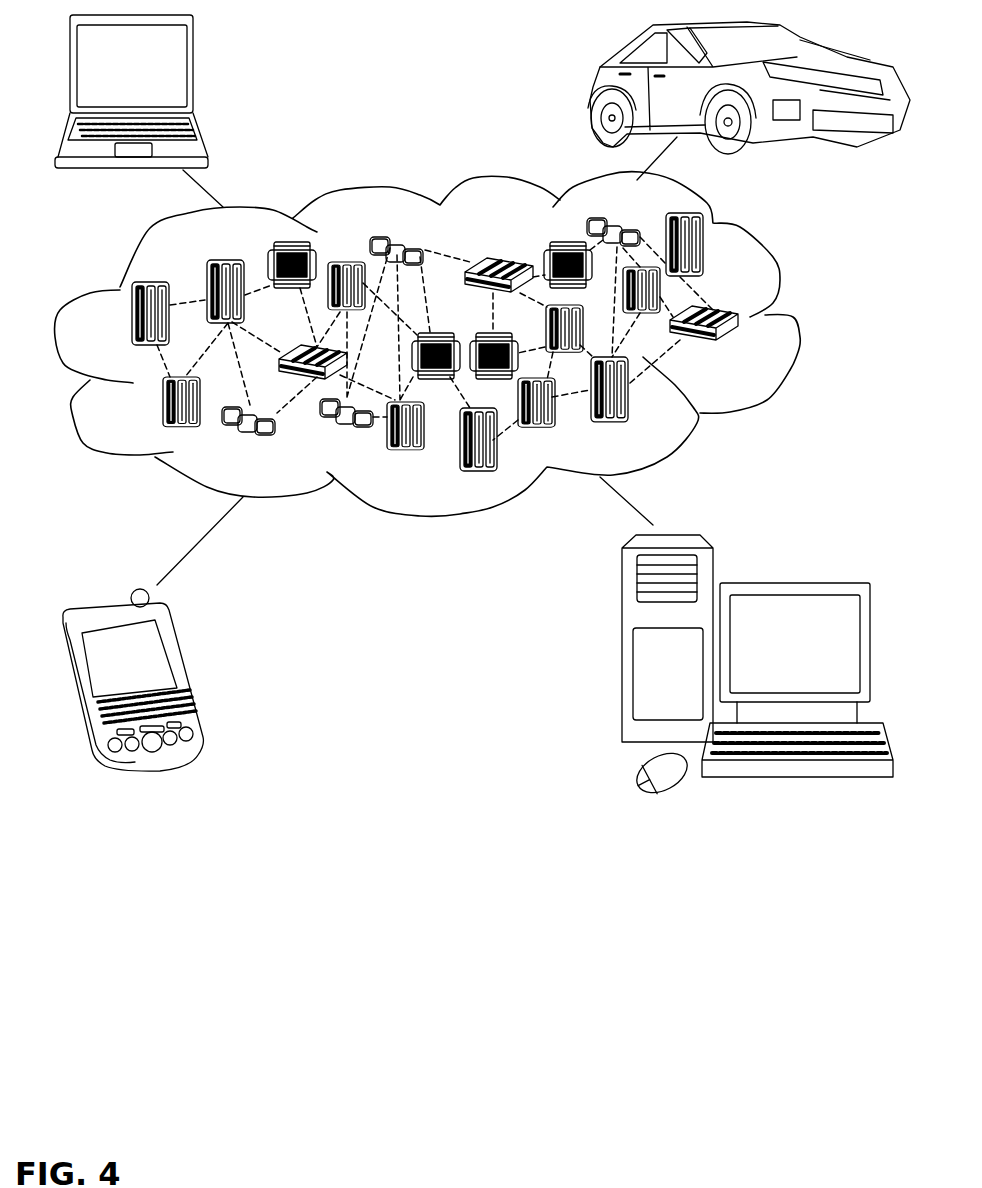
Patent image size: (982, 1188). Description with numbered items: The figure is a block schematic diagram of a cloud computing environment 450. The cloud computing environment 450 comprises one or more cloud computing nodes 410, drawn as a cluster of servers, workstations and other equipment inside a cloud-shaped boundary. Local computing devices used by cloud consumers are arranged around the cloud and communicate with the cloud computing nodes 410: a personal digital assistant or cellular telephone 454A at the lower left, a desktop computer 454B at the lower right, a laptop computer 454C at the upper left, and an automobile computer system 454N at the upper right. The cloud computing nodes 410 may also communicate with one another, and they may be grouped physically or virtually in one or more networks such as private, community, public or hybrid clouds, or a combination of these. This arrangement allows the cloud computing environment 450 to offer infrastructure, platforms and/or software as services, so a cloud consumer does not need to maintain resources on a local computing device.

The personal digital assistant or cellular telephone 454A is at (184, 669).
The desktop computer 454B is at (801, 567).
The laptop computer 454C is at (196, 72).
The automobile computer system 454N is at (590, 86).
The cloud computing environment 450 is at (797, 321).
The cloud computing nodes 410 is at (752, 354).